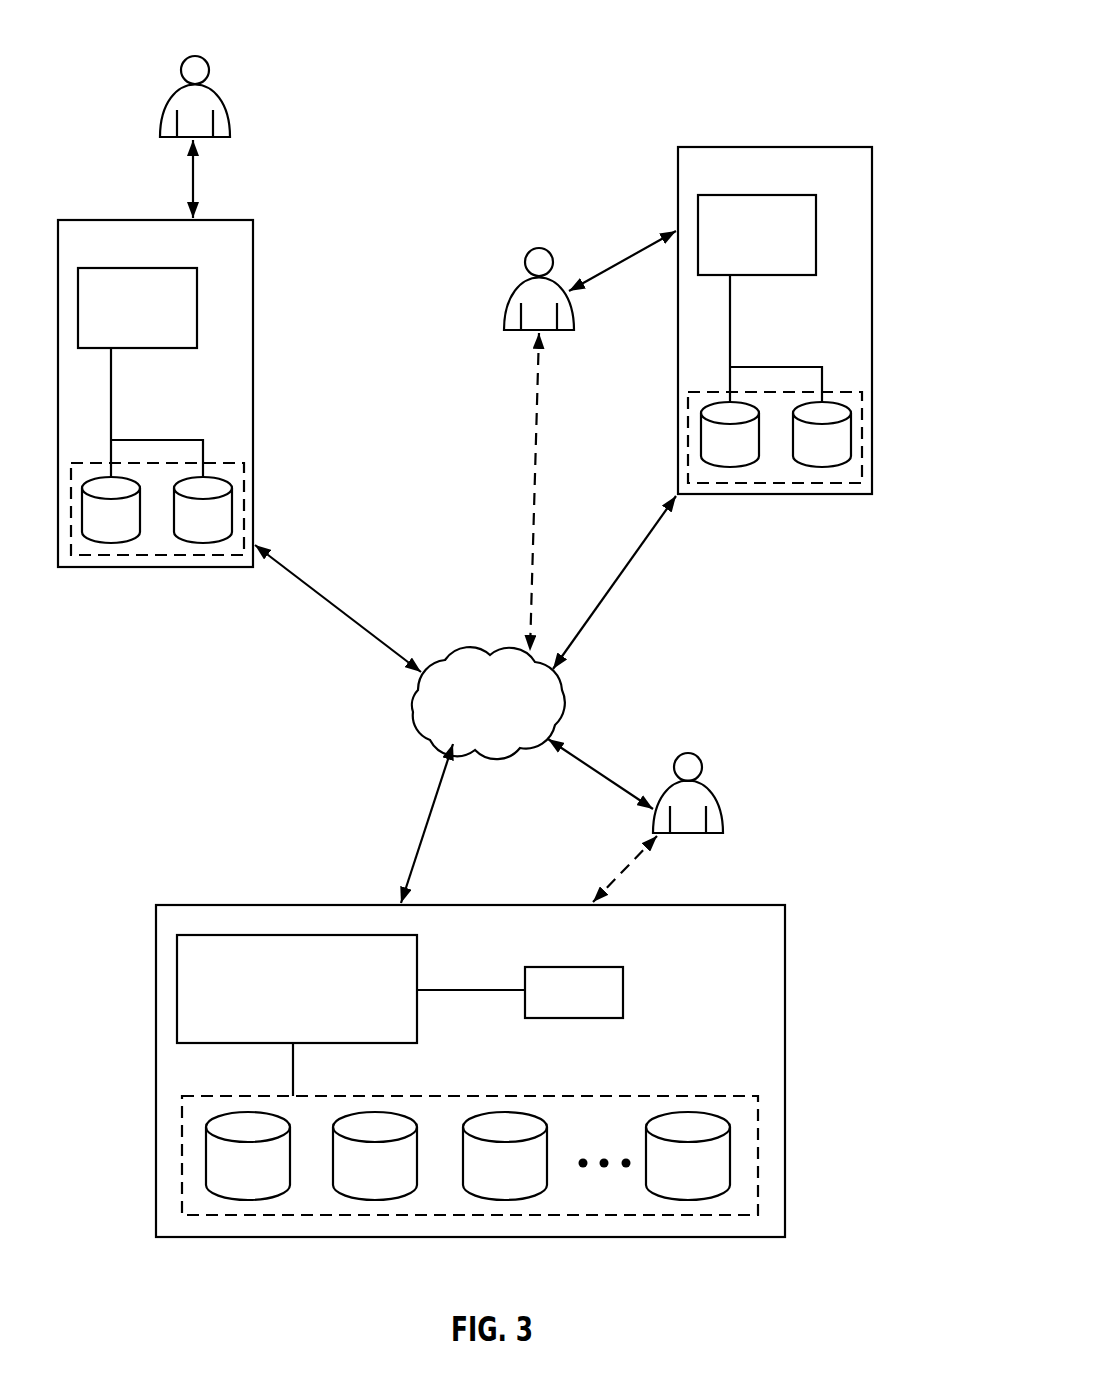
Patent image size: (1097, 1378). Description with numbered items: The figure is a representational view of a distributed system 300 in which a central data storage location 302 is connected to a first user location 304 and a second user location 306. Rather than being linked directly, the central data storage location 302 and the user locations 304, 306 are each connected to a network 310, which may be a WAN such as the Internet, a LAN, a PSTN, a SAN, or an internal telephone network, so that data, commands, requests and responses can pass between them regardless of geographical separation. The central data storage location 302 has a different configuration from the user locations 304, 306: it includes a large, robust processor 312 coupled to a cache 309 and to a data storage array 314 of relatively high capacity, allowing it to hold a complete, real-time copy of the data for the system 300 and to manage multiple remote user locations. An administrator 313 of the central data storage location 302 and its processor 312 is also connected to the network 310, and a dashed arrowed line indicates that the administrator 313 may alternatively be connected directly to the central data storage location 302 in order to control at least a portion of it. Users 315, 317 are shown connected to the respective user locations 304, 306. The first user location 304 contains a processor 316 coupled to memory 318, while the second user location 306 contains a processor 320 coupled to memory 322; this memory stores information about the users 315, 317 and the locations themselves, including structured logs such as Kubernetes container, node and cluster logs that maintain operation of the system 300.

The system 300 is at (895, 43).
The central data storage location 302 is at (178, 905).
The first user location 304 is at (108, 220).
The second user location 306 is at (728, 147).
The cache 309 is at (556, 1005).
The network 310 is at (473, 715).
The processor 312 is at (177, 988).
The administrator 313 is at (733, 783).
The data storage array 314 is at (212, 1217).
The user 315 is at (226, 80).
The processor 316 is at (120, 320).
The user 317 is at (507, 273).
The memory 318 is at (86, 547).
The processor 320 is at (740, 247).
The memory 322 is at (846, 476).